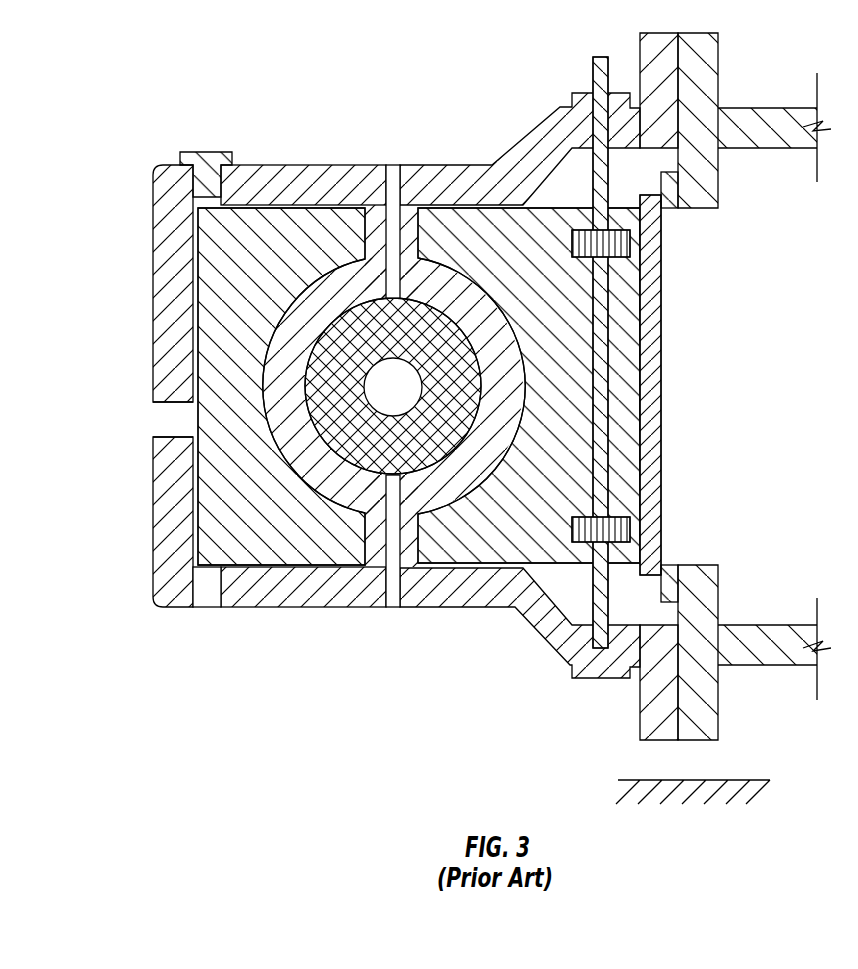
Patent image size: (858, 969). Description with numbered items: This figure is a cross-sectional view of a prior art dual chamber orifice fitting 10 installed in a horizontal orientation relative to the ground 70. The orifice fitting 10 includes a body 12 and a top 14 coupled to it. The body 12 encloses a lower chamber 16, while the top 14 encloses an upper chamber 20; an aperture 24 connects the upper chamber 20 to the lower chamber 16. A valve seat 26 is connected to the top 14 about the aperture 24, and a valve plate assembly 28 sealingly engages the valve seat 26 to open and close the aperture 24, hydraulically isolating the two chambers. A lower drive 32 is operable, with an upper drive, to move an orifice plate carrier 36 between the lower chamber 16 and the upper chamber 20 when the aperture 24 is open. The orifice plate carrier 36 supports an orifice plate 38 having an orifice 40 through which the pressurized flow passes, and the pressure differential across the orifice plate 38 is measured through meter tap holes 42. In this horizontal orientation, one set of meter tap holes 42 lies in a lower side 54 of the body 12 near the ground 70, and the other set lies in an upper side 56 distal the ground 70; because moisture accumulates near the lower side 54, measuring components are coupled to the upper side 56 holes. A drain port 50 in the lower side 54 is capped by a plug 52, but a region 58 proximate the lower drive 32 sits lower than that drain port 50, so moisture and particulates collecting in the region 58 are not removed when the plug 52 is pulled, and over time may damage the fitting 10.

The dual chamber orifice fitting 10 is at (188, 78).
The body 12 is at (297, 609).
The top 14 is at (763, 107).
The lower chamber 16 is at (583, 200).
The upper chamber 20 is at (770, 398).
The aperture 24 is at (676, 246).
The valve seat 26 is at (672, 564).
The valve plate assembly 28 is at (655, 421).
The lower drive 32 is at (592, 74).
The orifice plate carrier 36 is at (276, 244).
The orifice plate 38 is at (405, 455).
The orifice 40 is at (405, 398).
The meter tap holes 42 is at (394, 164).
The drain ports 50 is at (170, 424).
The plugs 52 is at (208, 150).
The lower side 54 is at (455, 609).
The upper side 56 is at (470, 164).
The region 58 is at (587, 607).
The ground 70 is at (725, 779).